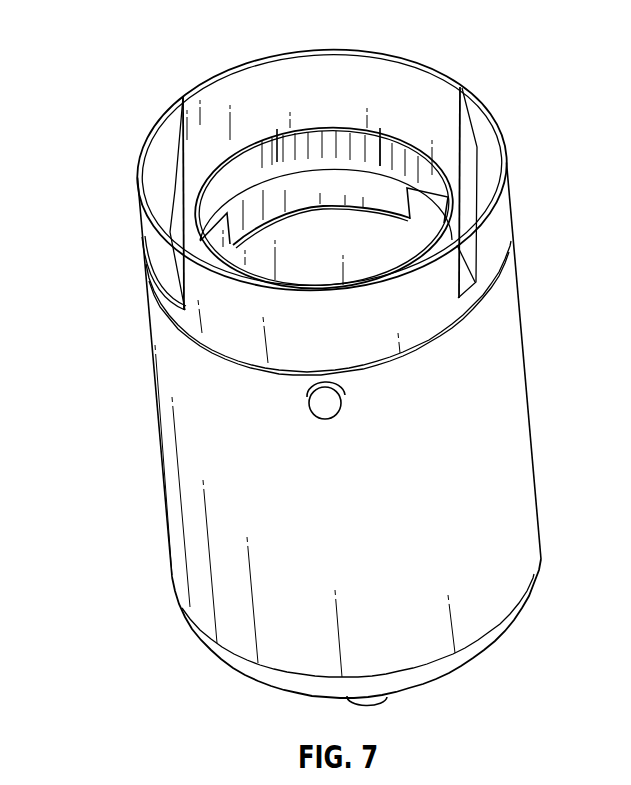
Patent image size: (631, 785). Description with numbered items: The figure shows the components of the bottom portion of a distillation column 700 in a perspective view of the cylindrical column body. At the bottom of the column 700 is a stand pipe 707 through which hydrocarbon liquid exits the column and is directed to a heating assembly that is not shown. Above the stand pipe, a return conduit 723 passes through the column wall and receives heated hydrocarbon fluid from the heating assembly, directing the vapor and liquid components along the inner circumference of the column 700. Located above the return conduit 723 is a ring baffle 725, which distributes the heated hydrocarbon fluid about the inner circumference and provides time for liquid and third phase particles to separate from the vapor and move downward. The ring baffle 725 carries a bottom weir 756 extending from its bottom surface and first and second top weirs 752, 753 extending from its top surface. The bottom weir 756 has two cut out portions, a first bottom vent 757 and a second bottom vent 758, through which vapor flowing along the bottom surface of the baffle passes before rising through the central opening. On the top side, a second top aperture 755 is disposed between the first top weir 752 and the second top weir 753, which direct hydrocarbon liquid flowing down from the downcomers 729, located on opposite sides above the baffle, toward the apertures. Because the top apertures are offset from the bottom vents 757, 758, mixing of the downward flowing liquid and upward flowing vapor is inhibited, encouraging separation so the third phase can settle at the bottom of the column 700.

The distillation column 700 is at (110, 48).
The stand pipe 707 is at (370, 703).
The return conduit 723 is at (335, 407).
The ring baffle 725 is at (320, 127).
The downcomers 729 is at (170, 152).
The first top weir 752 is at (400, 132).
The second top weir 753 is at (267, 133).
The second top aperture 755 is at (347, 147).
The bottom weir 756 is at (332, 196).
The first bottom vent 757 is at (440, 160).
The second bottom vent 758 is at (221, 243).